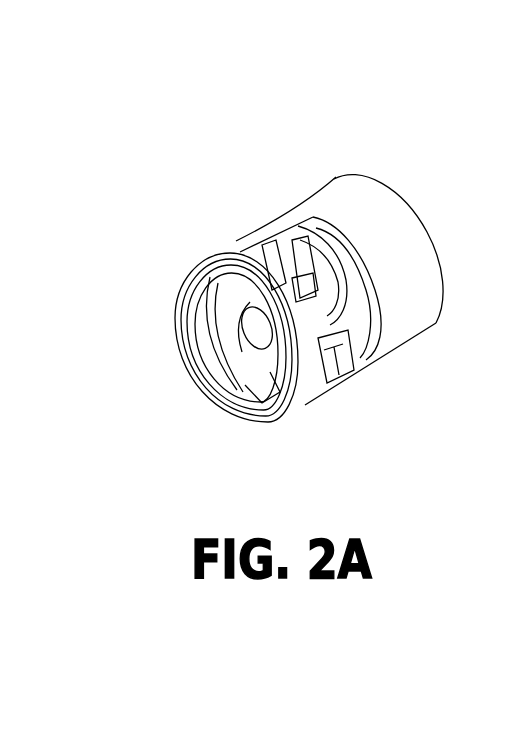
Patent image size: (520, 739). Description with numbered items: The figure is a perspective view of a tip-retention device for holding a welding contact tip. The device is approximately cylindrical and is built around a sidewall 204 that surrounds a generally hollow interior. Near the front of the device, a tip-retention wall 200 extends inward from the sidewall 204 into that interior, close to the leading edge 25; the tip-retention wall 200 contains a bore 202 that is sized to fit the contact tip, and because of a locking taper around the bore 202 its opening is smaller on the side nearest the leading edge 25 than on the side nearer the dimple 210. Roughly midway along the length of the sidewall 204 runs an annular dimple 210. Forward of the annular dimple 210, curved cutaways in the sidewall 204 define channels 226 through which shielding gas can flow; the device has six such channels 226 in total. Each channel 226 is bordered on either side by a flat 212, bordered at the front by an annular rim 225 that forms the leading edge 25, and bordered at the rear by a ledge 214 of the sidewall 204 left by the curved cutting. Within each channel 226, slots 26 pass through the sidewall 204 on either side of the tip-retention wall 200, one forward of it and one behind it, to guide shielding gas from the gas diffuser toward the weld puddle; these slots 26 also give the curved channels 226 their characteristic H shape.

The leading edge 25 is at (203, 263).
The slots 26 is at (296, 273).
The tip-retention wall 200 is at (191, 337).
The bore 202 is at (254, 339).
The sidewall 204 is at (402, 230).
The annular dimple 210 is at (313, 215).
The flat 212 is at (240, 250).
The ledge 214 is at (312, 275).
The annular rim 225 is at (170, 296).
The channels 226 is at (349, 359).